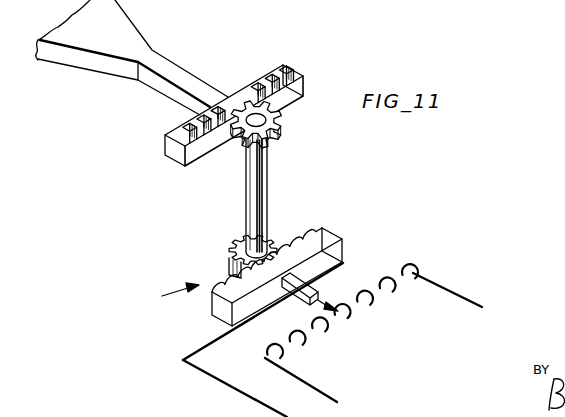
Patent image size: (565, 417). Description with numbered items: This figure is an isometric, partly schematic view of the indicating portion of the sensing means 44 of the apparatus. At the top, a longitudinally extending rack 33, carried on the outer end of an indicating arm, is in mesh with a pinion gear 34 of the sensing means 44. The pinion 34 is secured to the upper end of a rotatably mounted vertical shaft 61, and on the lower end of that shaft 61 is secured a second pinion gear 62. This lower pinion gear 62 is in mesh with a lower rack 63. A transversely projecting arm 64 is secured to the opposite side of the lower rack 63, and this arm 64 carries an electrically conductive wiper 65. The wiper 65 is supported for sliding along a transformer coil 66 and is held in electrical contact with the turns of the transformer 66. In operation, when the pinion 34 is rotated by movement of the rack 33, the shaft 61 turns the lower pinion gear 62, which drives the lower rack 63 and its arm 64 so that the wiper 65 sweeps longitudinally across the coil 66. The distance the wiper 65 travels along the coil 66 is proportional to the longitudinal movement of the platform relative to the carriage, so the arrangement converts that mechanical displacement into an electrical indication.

The rack 33 is at (286, 70).
The pinion gear 34 is at (284, 131).
The vertical shaft 61 is at (252, 190).
The pinion gear 62 is at (230, 254).
The lower rack 63 is at (332, 238).
The transversely projecting arm 64 is at (310, 292).
The wiper 65 is at (327, 306).
The transformer coil 66 is at (375, 292).
The sensing means 44 is at (167, 295).